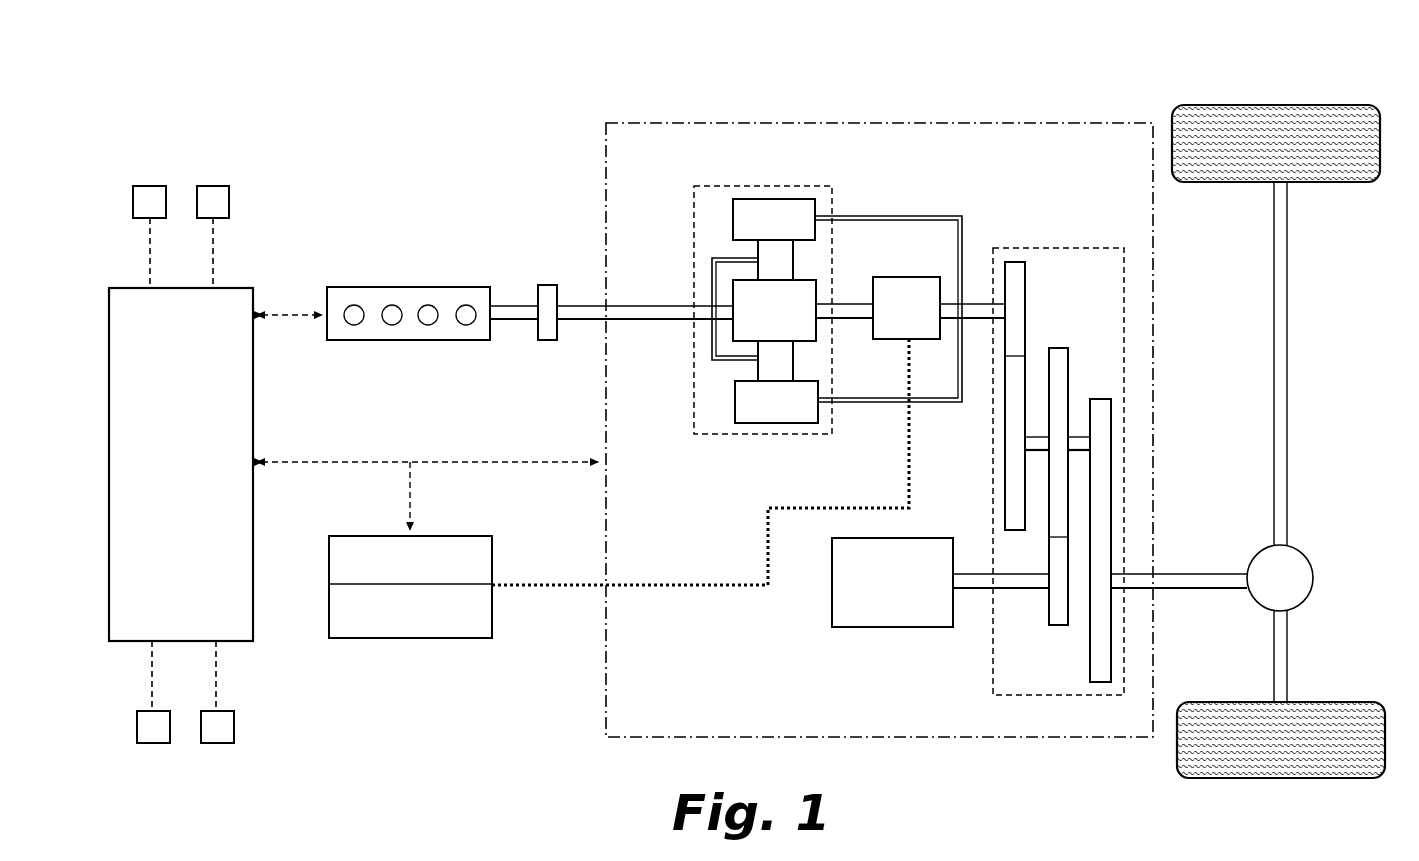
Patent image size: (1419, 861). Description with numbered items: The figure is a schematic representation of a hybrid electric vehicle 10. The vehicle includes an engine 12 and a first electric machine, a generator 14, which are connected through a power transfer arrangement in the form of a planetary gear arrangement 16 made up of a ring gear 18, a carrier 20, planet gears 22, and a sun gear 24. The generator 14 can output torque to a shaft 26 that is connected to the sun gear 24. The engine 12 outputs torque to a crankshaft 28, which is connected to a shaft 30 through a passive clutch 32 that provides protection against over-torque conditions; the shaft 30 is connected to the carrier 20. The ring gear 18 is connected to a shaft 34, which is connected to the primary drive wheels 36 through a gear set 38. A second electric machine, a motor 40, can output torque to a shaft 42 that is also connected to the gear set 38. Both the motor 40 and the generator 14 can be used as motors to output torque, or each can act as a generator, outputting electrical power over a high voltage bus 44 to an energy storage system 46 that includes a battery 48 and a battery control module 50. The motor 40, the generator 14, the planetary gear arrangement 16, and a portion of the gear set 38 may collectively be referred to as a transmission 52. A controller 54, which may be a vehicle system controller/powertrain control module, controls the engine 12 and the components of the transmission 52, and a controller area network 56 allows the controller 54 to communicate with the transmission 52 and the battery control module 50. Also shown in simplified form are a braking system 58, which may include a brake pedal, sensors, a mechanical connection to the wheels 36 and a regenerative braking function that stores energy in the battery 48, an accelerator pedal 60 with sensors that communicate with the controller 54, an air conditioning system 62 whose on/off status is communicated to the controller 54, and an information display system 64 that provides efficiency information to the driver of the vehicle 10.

The vehicle 10 is at (1106, 68).
The engine 12 is at (375, 287).
The generator 14 is at (905, 277).
The planetary gear arrangement 16 is at (744, 291).
The ring gear 18 is at (733, 215).
The carrier 20 is at (713, 280).
The planet gears 22 is at (758, 253).
The sun gear 24 is at (816, 338).
The shaft 26 is at (846, 303).
The crankshaft 28 is at (522, 321).
The shaft 30 is at (587, 321).
The passive clutch 32 is at (548, 285).
The shaft 34 is at (982, 302).
The primary drive wheels 36 is at (1314, 187).
The gear set 38 is at (1070, 702).
The motor 40 is at (897, 628).
The shaft 42 is at (980, 573).
The high voltage bus 44 is at (720, 582).
The energy storage system 46 is at (325, 580).
The battery 48 is at (466, 536).
The battery control module (BCM) 50 is at (470, 638).
The transmission 52 is at (600, 168).
The controller 54 is at (232, 288).
The controller area network (CAN) 56 is at (350, 460).
The braking system 58 is at (150, 743).
The accelerator pedal 60 is at (218, 743).
The air conditioning system 62 is at (213, 186).
The information display system 64 is at (150, 186).